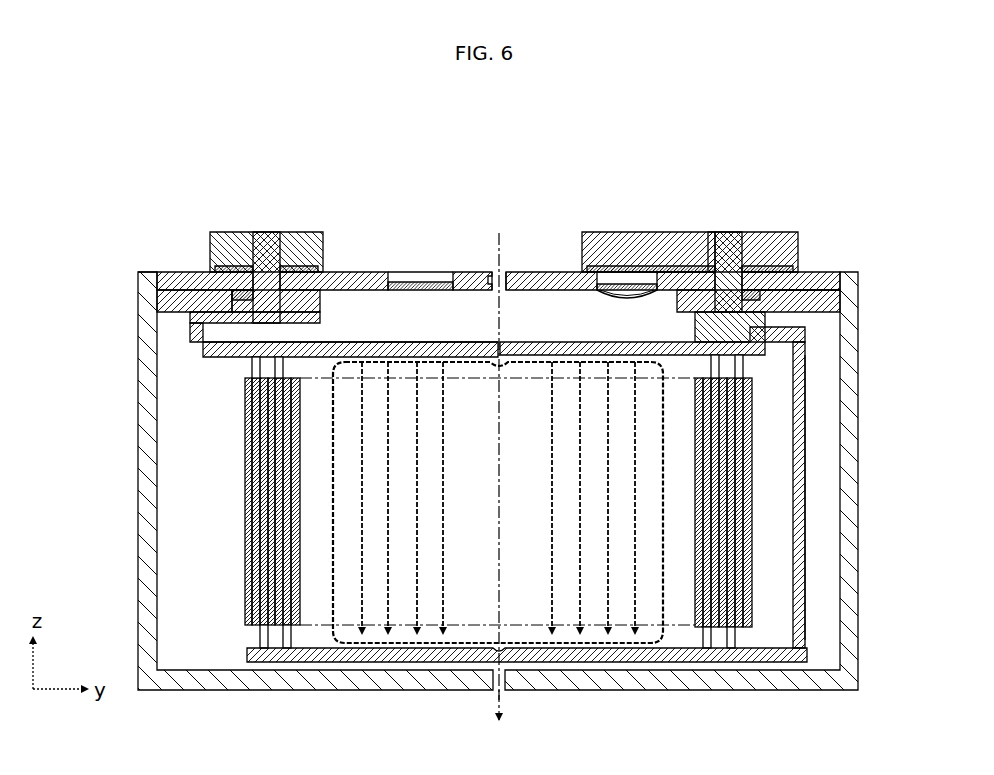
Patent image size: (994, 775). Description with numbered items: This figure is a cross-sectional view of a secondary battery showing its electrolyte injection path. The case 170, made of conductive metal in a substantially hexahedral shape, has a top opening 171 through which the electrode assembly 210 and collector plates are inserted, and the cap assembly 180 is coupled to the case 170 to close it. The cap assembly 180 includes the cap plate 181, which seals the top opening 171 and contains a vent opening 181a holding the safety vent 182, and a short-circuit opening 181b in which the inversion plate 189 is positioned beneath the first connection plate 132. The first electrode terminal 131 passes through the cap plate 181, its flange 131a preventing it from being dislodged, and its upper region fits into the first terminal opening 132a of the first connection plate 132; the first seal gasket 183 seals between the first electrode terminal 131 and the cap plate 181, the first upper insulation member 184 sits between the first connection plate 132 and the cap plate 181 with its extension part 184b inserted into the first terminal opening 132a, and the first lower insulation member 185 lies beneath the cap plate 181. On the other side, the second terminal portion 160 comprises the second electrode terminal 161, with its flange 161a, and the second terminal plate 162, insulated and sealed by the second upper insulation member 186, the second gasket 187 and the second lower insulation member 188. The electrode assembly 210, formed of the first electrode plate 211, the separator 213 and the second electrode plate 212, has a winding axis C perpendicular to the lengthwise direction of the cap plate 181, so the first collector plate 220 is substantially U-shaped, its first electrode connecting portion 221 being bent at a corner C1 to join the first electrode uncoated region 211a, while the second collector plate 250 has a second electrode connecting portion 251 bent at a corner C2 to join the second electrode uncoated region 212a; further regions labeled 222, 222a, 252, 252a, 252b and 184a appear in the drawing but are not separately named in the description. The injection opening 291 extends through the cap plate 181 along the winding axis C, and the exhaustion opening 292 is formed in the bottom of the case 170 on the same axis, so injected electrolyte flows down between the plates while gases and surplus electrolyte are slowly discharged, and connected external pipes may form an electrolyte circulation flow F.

The second terminal portion 160 is at (266, 240).
The second electrode terminal 161 is at (277, 260).
The flange 161a is at (322, 303).
The second terminal plate 162 is at (243, 250).
The case 170 is at (868, 609).
The top opening 171 is at (157, 272).
The cap assembly 180 is at (343, 264).
The cap plate 181 is at (364, 272).
The vent opening 181a is at (408, 292).
The short-circuit opening 181b is at (603, 291).
The safety vent 182 is at (420, 280).
The first seal gasket 183 is at (805, 286).
The first upper insulation member 184 is at (762, 292).
The second gasket upper portion 184a is at (640, 266).
The extension part 184b is at (770, 266).
The first lower insulation member 185 is at (846, 294).
The second upper insulation member 186 is at (232, 266).
The second seal gasket 187 is at (240, 292).
The second lower insulation member 188 is at (165, 300).
The inversion plate 189 is at (634, 296).
The first electrode terminal 131 is at (730, 245).
The flange 131a is at (695, 325).
The first connection plate 132 is at (592, 230).
The first terminal opening 132a is at (712, 245).
The electrode assembly 210 is at (330, 662).
The first electrode plate 211 is at (721, 553).
The first electrode uncoated region 211a is at (740, 640).
The second electrode plate 212 is at (194, 554).
The second electrode uncoated region 212a is at (254, 372).
The separator 213 is at (296, 630).
The first collector plate 220 is at (726, 451).
The first electrode connecting portion 221 is at (812, 540).
The second collector plate 222 is at (808, 330).
The second collector extension 222a is at (810, 335).
The second collector plate 250 is at (277, 320).
The second electrode connecting portion 251 is at (203, 357).
The first collector plate 252 is at (215, 315).
The first collector horizontal portion 252a is at (280, 323).
The first collector bent portion 252b is at (196, 325).
The injection opening 291 is at (494, 272).
The exhaustion opening 292 is at (503, 695).
The winding axis C is at (503, 447).
The corner C1 is at (842, 310).
The corner C2 is at (190, 342).
The electrolyte circulation flow F is at (502, 255).